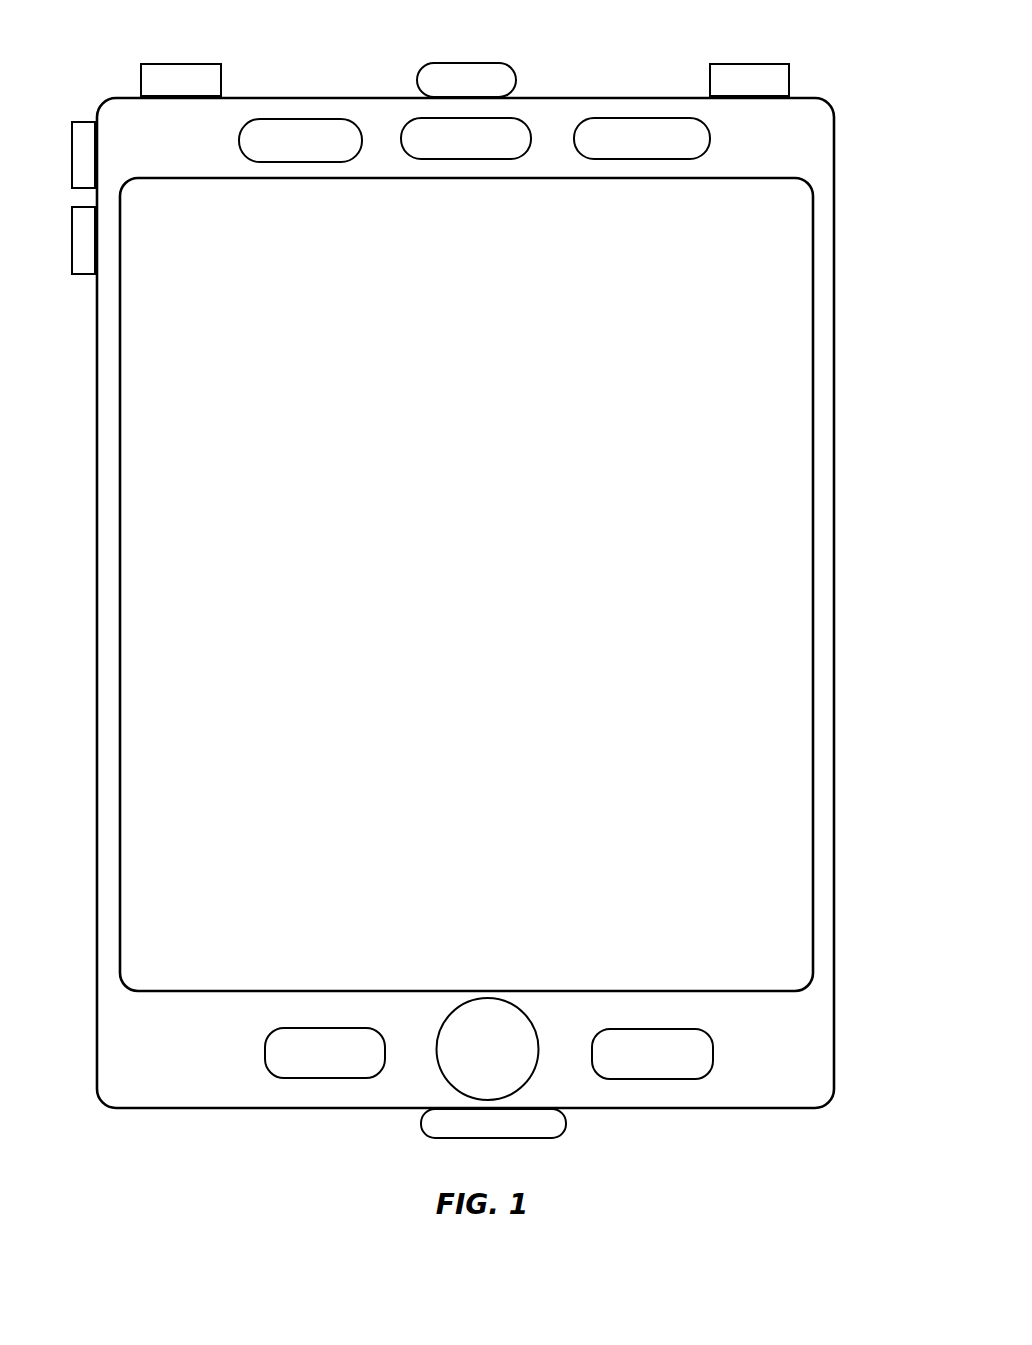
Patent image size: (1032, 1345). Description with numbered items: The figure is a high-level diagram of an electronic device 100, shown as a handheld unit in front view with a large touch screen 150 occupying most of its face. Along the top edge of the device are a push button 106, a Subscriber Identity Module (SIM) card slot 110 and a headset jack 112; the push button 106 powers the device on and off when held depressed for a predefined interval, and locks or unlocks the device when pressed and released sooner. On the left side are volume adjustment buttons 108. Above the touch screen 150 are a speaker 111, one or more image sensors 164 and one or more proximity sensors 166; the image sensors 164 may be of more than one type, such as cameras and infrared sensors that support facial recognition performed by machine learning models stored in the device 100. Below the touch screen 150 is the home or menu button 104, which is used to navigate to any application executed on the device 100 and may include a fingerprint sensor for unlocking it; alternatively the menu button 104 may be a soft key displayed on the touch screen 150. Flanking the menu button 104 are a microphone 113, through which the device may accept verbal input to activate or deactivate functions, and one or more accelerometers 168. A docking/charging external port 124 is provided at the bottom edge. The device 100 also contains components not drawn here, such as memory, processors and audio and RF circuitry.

The electronic device 100 is at (876, 93).
The menu button 104 is at (488, 1049).
The push button 106 is at (181, 80).
The volume adjustment buttons 108 is at (72, 142).
The Subscriber Identity Module (SIM) card slot 110 is at (466, 80).
The speaker 111 is at (300, 140).
The headset jack 112 is at (749, 80).
The microphone 113 is at (325, 1053).
The docking/charging external port 124 is at (493, 1123).
The touch screen 150 is at (820, 474).
The image sensors 164 is at (466, 138).
The proximity sensors 166 is at (642, 138).
The accelerometers 168 is at (652, 1054).